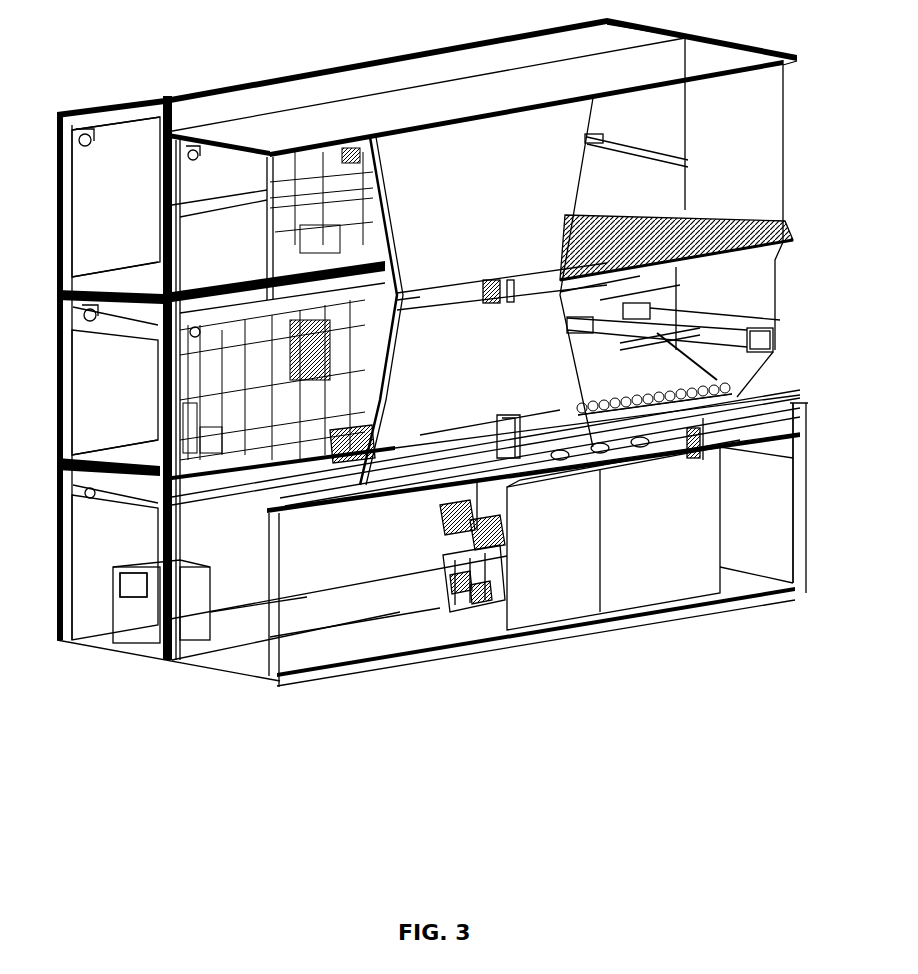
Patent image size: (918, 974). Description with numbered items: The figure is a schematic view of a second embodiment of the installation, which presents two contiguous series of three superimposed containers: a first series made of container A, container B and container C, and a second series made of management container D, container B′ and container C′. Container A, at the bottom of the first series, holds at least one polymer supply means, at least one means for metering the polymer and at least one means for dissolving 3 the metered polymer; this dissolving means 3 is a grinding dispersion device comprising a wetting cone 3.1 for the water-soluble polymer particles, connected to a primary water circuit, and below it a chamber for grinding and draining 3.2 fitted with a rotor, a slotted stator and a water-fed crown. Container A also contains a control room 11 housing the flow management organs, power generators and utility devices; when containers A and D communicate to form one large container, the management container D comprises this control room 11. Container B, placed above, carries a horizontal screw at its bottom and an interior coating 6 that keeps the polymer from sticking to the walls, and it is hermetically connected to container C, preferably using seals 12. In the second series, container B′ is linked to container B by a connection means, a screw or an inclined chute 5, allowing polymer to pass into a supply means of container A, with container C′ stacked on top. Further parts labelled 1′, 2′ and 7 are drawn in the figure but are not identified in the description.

The container A is at (810, 487).
The container B is at (778, 312).
The container C is at (786, 147).
The container C′ is at (57, 228).
The container B′ is at (57, 406).
The management container D is at (57, 554).
The first processing unit 1′ is at (457, 510).
The second processing unit 2′ is at (500, 523).
The means for dissolving 3 is at (443, 567).
The wetting cone 3.1 is at (458, 577).
The chamber for grinding and draining 3.2 is at (457, 580).
The inclined chute 5 is at (650, 398).
The interior coating 6 is at (367, 432).
The guide rail 7 is at (691, 356).
The control room 11 is at (113, 607).
The seals 12 is at (392, 307).